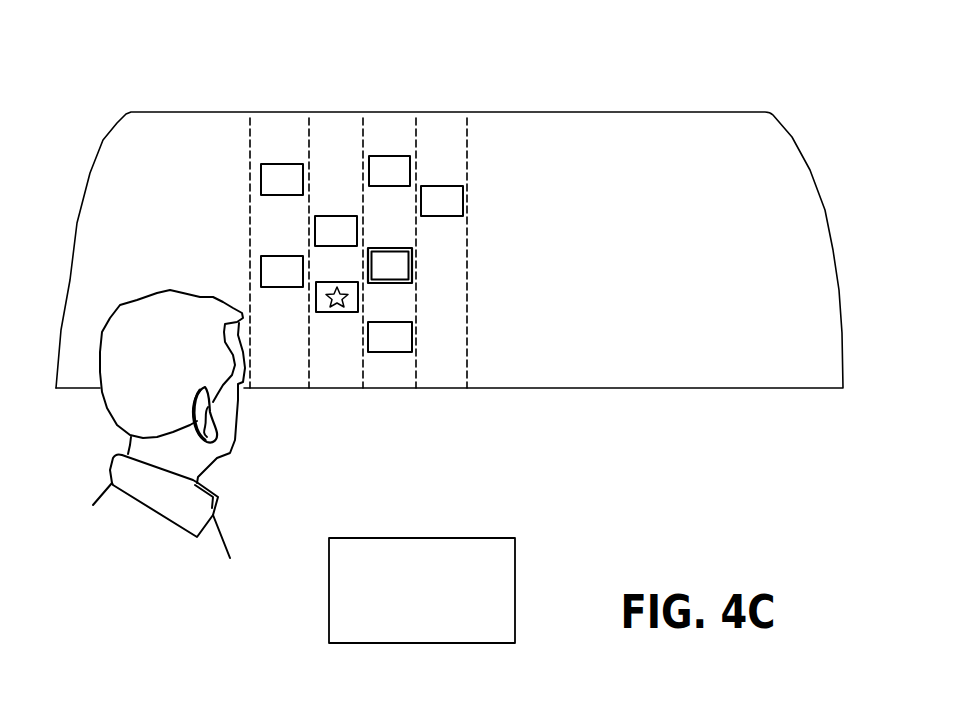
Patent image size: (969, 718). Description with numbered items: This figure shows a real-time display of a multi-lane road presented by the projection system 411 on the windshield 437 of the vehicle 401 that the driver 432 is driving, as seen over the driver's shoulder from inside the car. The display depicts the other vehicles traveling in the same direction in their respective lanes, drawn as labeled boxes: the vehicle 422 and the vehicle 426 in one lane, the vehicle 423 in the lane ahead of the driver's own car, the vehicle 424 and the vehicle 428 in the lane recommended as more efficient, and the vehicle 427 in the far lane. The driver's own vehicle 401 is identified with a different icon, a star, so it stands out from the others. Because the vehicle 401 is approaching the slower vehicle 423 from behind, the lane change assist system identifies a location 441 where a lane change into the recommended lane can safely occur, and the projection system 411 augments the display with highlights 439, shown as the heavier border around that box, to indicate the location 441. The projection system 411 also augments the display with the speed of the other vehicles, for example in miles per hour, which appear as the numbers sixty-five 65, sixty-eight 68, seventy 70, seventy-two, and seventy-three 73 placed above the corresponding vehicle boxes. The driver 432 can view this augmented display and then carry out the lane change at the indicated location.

The windshield 437 is at (785, 138).
The highlights 439 is at (397, 248).
The driver 432 is at (215, 522).
The projection system 411 is at (407, 621).
The vehicle 401 is at (359, 281).
The vehicle 422 is at (266, 281).
The vehicle 423 is at (320, 241).
The vehicle 424 is at (375, 347).
The vehicle 426 is at (266, 189).
The vehicle 427 is at (426, 211).
The vehicle 428 is at (374, 181).
The location 441 is at (375, 275).
The displayed value 65 is at (336, 204).
The displayed value 68 is at (390, 312).
The displayed value 70 is at (441, 171).
The displayed value 73 is at (282, 154).